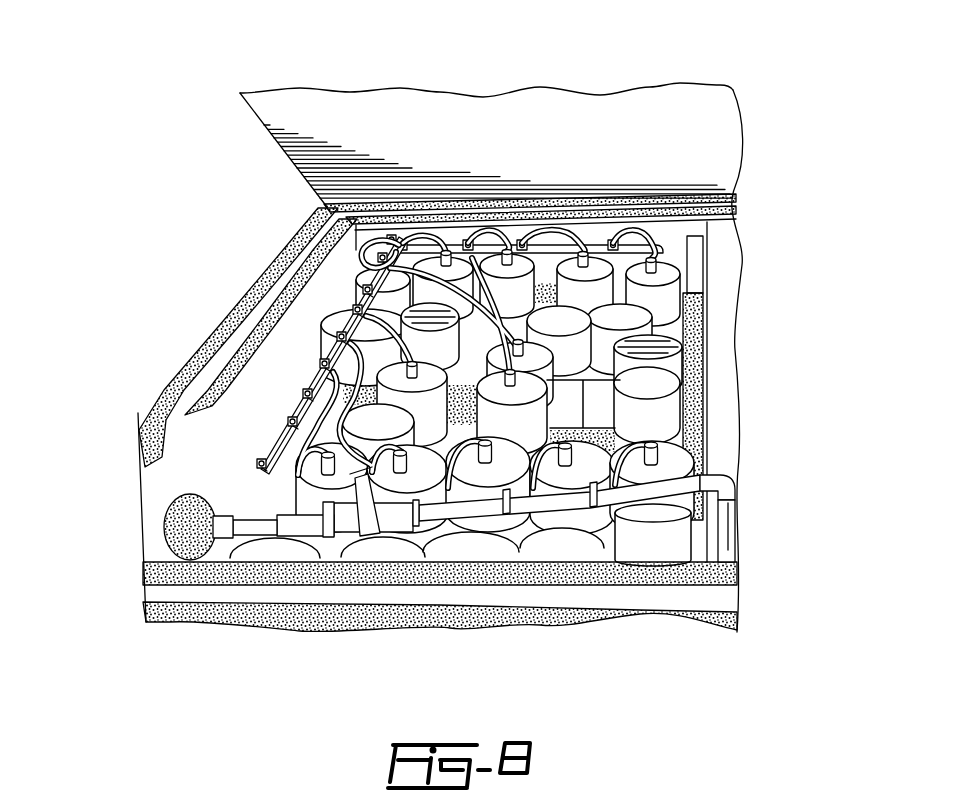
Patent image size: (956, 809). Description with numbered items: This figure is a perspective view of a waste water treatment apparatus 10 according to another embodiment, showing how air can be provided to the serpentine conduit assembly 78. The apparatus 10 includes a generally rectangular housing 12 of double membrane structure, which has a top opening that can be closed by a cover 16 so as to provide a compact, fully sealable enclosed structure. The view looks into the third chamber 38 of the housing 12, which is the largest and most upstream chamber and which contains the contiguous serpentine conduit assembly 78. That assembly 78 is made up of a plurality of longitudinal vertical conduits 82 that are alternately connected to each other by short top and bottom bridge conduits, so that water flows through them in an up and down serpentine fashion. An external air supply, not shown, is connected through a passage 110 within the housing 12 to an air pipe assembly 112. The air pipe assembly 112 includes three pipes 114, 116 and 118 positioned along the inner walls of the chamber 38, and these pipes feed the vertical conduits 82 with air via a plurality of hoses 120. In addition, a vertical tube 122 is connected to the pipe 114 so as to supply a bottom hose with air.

The apparatus 10 is at (762, 152).
The housing 12 is at (657, 600).
The cover 16 is at (378, 108).
The third chamber 38 is at (327, 305).
The serpentine conduit assembly 78 is at (264, 426).
The longitudinal vertical conduits 82 is at (603, 268).
The passage 110 is at (183, 510).
The air pipe assembly 112 is at (308, 354).
The pipe 114 is at (557, 500).
The pipe 116 is at (330, 320).
The pipe 118 is at (458, 246).
The hoses 120 is at (526, 266).
The vertical tube 122 is at (728, 532).